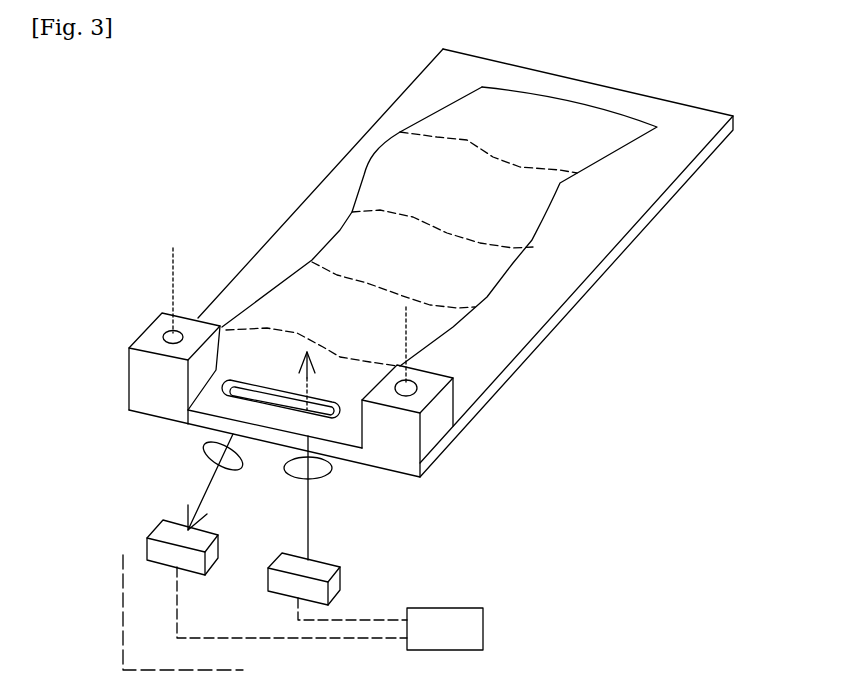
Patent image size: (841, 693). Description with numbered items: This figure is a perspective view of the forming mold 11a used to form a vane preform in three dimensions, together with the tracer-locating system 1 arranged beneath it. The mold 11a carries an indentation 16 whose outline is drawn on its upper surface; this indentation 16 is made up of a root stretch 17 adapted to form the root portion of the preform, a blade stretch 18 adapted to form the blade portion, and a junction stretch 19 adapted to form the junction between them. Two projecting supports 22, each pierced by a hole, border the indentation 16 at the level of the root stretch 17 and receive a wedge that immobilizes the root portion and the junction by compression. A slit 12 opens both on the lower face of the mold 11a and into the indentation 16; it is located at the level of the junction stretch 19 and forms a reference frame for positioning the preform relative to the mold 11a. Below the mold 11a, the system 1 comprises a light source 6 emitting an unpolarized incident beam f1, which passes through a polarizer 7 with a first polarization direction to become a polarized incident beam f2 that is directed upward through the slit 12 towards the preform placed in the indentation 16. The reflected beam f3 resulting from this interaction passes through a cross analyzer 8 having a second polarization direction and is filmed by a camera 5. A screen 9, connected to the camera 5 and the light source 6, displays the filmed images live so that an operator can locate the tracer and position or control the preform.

The system 1 is at (110, 641).
The camera 5 is at (160, 522).
The light source 6 is at (347, 578).
The polarizer 7 is at (334, 474).
The cross analyzer 8 is at (207, 460).
The screen 9 is at (460, 615).
The forming mold 11a is at (613, 300).
The slit 12 is at (252, 397).
The indentation 16 is at (362, 163).
The root stretch 17 is at (218, 402).
The blade stretch 18 is at (343, 253).
The junction stretch 19 is at (225, 376).
The projecting supports 22 is at (150, 341).
The unpolarized incident beam f1 is at (309, 528).
The polarized incident beam f2 is at (309, 380).
The reflected beam f3 is at (214, 476).